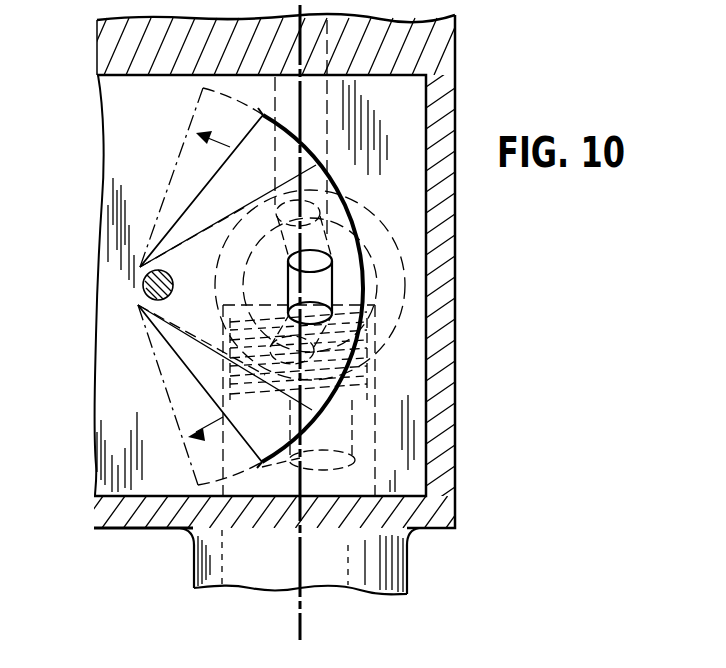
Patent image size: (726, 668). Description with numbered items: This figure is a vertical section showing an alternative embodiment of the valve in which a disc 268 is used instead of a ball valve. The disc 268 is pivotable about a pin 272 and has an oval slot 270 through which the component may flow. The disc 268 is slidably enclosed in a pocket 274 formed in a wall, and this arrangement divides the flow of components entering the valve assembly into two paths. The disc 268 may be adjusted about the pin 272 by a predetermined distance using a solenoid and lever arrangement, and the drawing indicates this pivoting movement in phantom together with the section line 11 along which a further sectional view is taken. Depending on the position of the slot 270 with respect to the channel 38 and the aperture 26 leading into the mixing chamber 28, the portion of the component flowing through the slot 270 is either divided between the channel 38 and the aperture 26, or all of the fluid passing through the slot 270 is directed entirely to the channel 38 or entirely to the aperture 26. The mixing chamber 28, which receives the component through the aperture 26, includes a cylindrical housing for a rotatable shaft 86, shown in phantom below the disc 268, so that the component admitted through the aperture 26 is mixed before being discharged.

The section line 11- 11 is at (245, 55).
The aperture 26 is at (374, 366).
The mixing chamber 28 is at (420, 577).
The channel 38 is at (337, 116).
The rotatable shaft 86 is at (345, 422).
The disc 268 is at (178, 333).
The oval slot 270 is at (323, 277).
The pin 272 is at (150, 290).
The pocket 274 is at (119, 475).